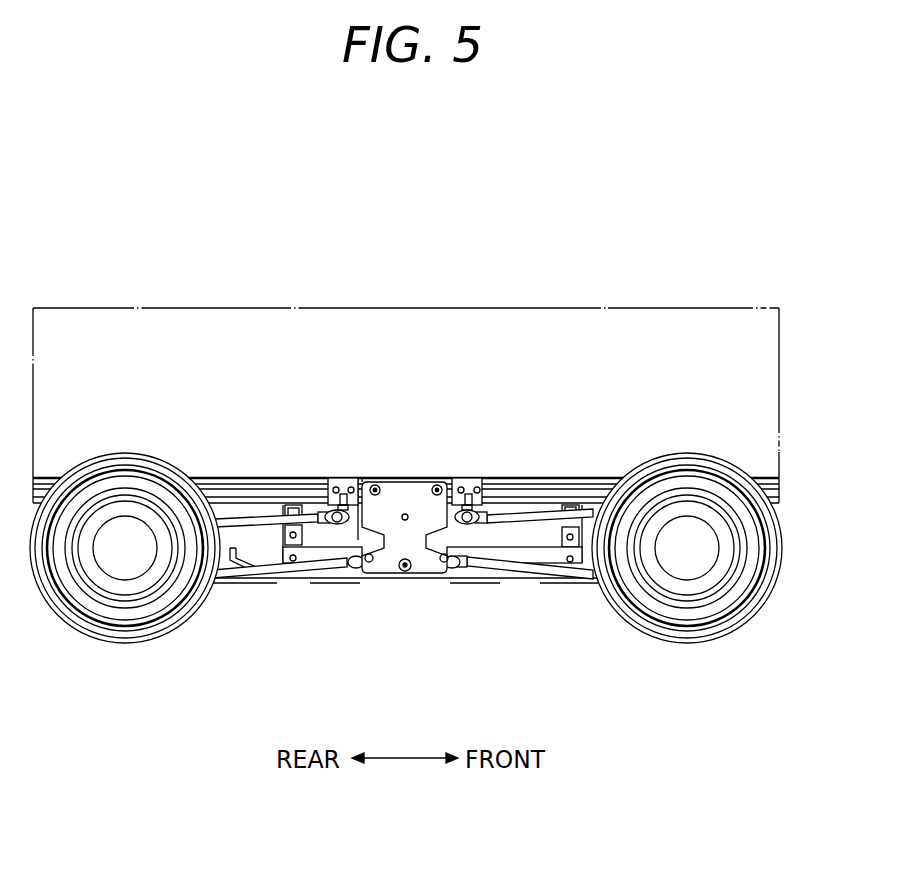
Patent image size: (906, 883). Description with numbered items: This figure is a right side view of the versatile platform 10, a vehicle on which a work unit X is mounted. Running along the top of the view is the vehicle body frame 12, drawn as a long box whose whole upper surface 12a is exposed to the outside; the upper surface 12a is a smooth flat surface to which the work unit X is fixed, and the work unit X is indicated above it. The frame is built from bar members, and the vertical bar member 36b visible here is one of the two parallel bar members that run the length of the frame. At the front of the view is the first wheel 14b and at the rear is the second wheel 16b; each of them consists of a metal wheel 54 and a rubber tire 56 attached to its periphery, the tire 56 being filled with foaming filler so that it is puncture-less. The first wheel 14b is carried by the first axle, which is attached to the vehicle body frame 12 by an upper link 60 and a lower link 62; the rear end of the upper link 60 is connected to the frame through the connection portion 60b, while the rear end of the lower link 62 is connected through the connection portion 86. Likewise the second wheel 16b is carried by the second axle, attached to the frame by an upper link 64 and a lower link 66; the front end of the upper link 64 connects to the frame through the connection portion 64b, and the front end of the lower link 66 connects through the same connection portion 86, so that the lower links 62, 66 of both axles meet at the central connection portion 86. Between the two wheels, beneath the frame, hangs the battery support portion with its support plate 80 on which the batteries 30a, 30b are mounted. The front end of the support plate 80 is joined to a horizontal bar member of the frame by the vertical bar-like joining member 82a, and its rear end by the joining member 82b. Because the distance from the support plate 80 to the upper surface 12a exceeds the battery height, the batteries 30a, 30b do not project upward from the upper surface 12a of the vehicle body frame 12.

The versatile platform 10 is at (57, 124).
The vehicle body frame 12 is at (282, 473).
The upper surface 12a is at (357, 479).
The first wheel 14b is at (746, 631).
The second wheel 16b is at (76, 631).
The battery 30a is at (517, 513).
The battery 30b is at (440, 528).
The vertical bar member 36b is at (524, 482).
The wheel 54 is at (125, 555).
The tire 56 is at (115, 632).
The upper link 60 is at (520, 522).
The connection portion 60b is at (468, 482).
The lower link 62 is at (568, 578).
The upper link 64 is at (245, 523).
The connection portion 64b is at (340, 480).
The lower link 66 is at (240, 575).
The support plate 80 is at (407, 580).
The joining member 82a is at (545, 522).
The joining member 82b is at (306, 532).
The connection portion 86 is at (392, 540).
The work unit X is at (685, 302).